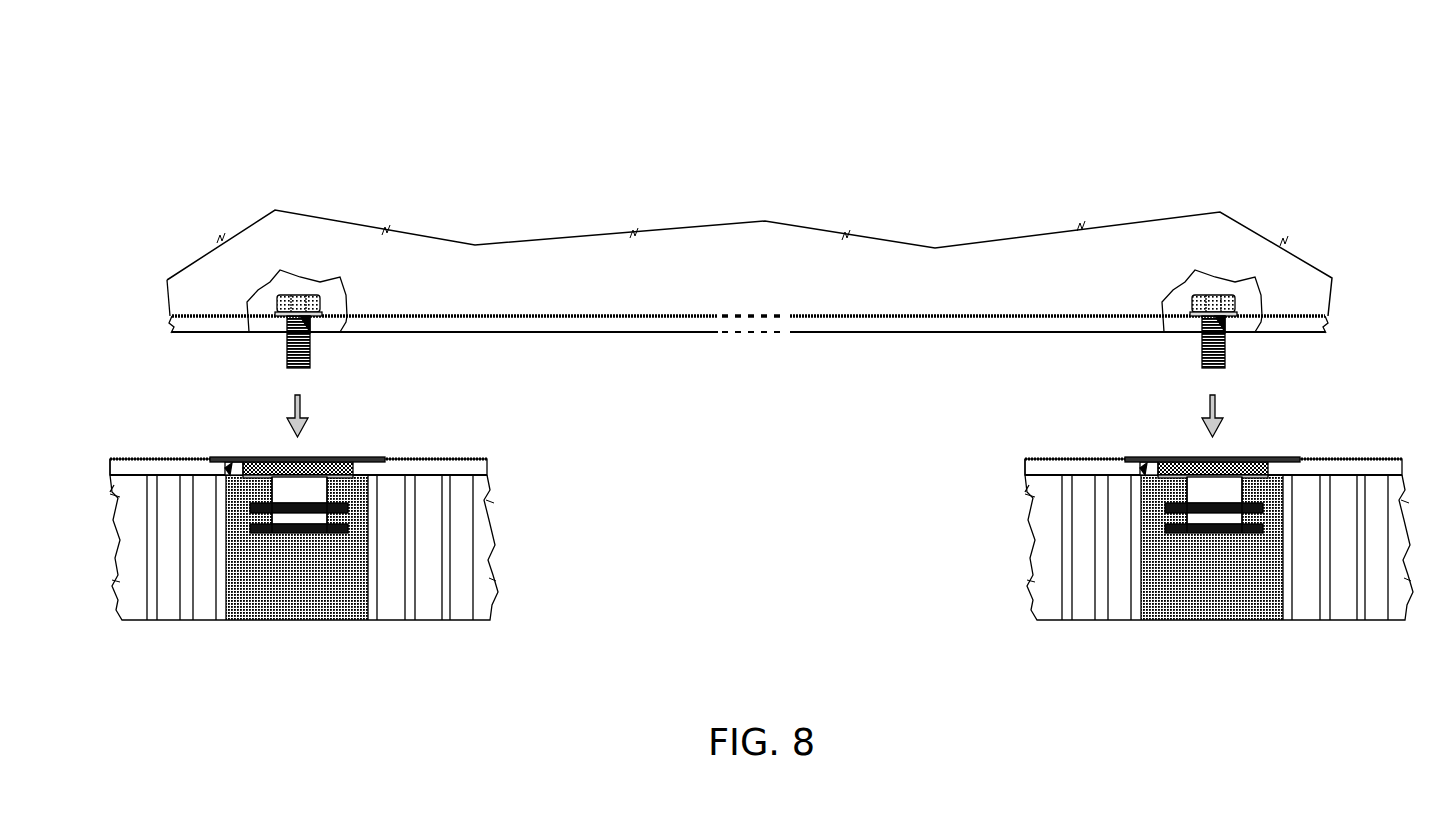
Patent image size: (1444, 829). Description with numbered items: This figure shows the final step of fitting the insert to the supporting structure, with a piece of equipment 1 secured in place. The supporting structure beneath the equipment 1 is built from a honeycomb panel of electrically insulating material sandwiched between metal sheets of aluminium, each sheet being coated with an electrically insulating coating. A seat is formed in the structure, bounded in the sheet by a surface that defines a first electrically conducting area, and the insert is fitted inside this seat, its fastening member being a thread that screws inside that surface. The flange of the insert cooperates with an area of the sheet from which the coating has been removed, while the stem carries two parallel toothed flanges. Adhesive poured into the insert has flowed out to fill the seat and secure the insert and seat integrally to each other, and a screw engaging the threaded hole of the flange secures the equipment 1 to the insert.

The piece of equipment 1 is at (463, 160).